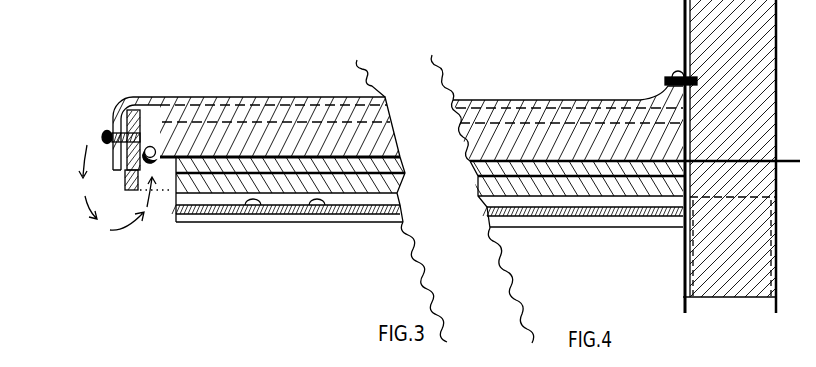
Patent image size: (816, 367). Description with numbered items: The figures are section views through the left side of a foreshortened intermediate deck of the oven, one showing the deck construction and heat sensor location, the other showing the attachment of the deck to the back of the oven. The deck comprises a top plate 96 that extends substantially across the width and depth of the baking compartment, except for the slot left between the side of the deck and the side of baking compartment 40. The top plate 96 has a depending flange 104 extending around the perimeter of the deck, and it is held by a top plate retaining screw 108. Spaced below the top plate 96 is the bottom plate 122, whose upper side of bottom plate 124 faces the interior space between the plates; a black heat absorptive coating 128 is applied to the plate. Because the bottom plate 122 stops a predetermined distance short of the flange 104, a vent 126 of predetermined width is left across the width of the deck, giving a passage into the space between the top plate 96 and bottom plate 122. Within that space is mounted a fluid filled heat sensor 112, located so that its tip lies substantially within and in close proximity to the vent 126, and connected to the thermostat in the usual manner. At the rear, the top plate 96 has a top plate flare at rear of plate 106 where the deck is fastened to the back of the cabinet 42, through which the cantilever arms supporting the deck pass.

In FIG. 4, the side of baking compartment 40 is at (683, 297).
In FIG. 4, the back of the cabinet 42 is at (683, 275).
In FIG. 3, the top plate 96 is at (223, 96).
In FIG. 4, the top plate 96 is at (482, 100).
In FIG. 3, the top plate flange 104 is at (113, 155).
In FIG. 4, the top plate flare at rear of plate 106 is at (668, 90).
In FIG. 3, the top plate retaining screw 108 is at (105, 131).
In FIG. 3, the heat sensor 112 is at (153, 146).
In FIG. 3, the bottom plate 122 is at (348, 212).
In FIG. 4, the bottom plate 122 is at (530, 218).
In FIG. 3, the upper side of bottom plate 124 is at (314, 205).
In FIG. 3, the vent 126 is at (117, 187).
In FIG. 3, the heat absorptive coating 128 is at (248, 199).